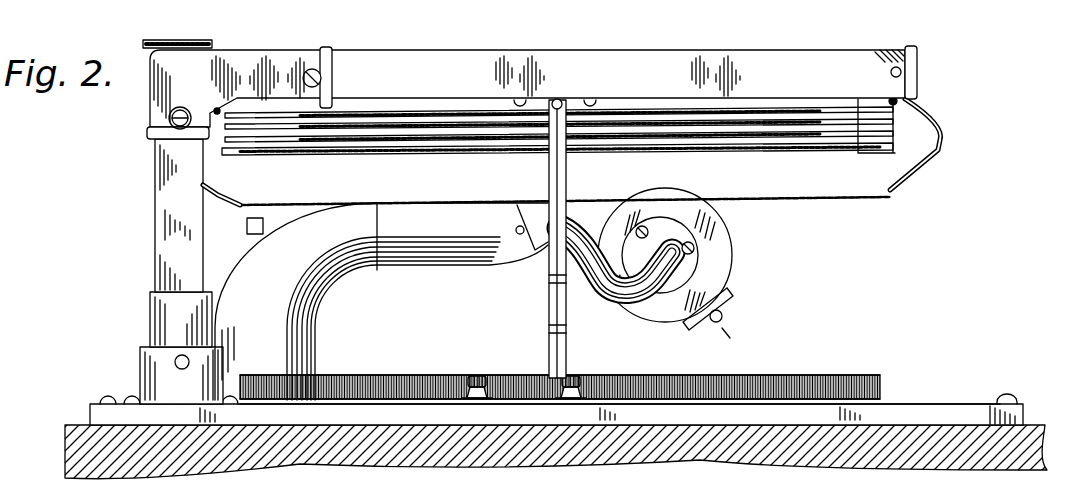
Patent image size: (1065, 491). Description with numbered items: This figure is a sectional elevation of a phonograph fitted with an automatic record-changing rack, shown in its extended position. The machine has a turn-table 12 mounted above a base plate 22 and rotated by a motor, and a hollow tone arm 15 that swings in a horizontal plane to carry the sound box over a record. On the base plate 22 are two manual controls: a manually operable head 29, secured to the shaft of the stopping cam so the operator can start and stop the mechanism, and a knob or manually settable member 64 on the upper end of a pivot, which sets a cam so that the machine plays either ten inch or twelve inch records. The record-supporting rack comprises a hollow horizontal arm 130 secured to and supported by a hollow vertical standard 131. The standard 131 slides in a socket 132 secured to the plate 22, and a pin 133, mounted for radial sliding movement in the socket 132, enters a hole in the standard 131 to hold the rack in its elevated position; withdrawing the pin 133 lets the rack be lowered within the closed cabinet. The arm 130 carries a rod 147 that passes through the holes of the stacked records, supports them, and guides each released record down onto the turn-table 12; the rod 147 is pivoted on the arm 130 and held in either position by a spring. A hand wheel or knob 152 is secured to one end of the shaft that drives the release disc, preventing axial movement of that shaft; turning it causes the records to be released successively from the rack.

The turn-table 12 is at (881, 386).
The tone arm 15 is at (414, 267).
The base plate 22 is at (950, 404).
The manually operable head 29 is at (482, 377).
The knob or manually settable member 64 is at (576, 377).
The hollow horizontal arm 130 is at (547, 62).
The hollow vertical standard 131 is at (158, 229).
The socket 132 is at (163, 312).
The pin 133 is at (175, 362).
The rod 147 is at (566, 188).
The hand wheel or knob 152 is at (213, 44).